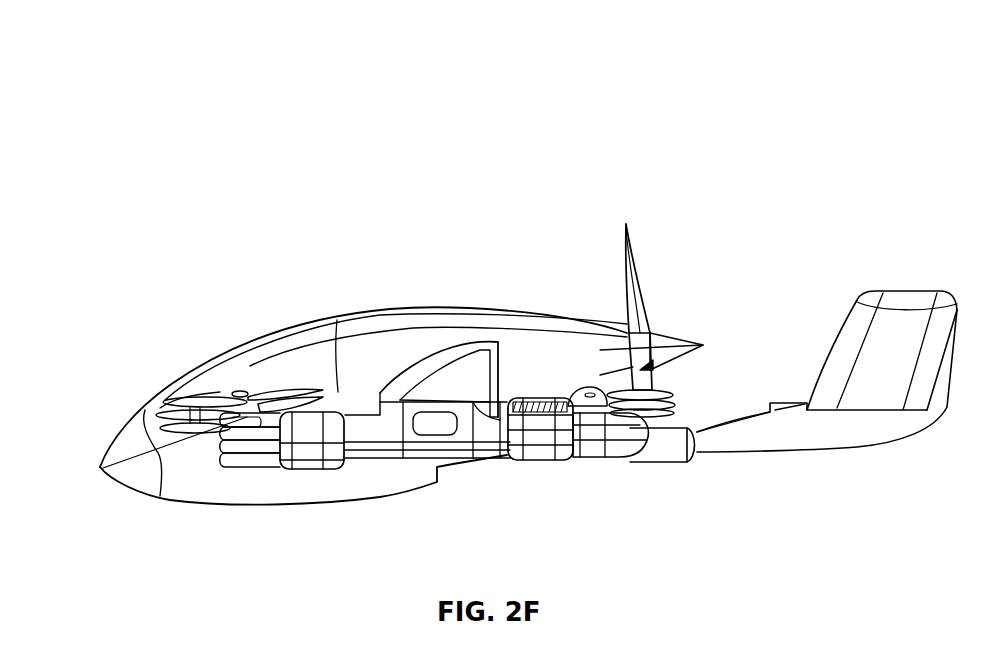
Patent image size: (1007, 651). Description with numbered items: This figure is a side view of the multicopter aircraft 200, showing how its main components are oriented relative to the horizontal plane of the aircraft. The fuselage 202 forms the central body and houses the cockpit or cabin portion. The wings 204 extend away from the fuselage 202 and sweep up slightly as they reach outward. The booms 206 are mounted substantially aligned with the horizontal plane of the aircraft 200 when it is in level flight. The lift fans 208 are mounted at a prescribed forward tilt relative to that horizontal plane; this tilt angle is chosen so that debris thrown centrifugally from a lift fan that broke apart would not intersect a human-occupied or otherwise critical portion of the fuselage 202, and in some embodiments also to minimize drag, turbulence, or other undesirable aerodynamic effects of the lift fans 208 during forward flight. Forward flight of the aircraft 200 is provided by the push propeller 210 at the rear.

The multicopter aircraft 200 is at (156, 104).
The fuselage 202 is at (317, 320).
The wings 204 is at (450, 347).
The booms 206 is at (307, 465).
The lift fans 208 is at (237, 393).
The push propeller 210 is at (647, 288).